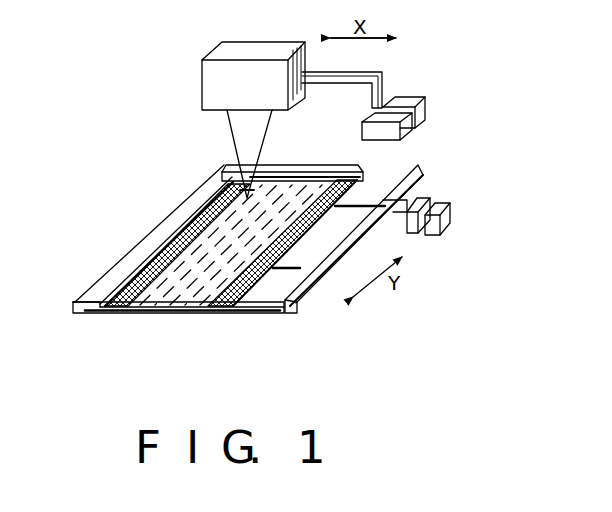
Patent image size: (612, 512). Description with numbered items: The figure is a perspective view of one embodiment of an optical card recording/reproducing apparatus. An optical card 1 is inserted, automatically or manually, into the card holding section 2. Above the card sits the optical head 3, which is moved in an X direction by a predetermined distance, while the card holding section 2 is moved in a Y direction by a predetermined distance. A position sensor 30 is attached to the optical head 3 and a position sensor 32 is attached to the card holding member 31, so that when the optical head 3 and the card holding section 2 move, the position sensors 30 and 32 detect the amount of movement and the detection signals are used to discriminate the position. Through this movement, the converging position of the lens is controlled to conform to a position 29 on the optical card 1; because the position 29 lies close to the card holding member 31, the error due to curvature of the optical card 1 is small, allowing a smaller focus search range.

The optical card 1 is at (163, 313).
The card holding section 2 is at (417, 165).
The optical head 3 is at (227, 53).
The position 29 is at (247, 200).
The position sensor 30 is at (425, 103).
The card holding member 31 is at (113, 275).
The position sensor 32 is at (452, 213).